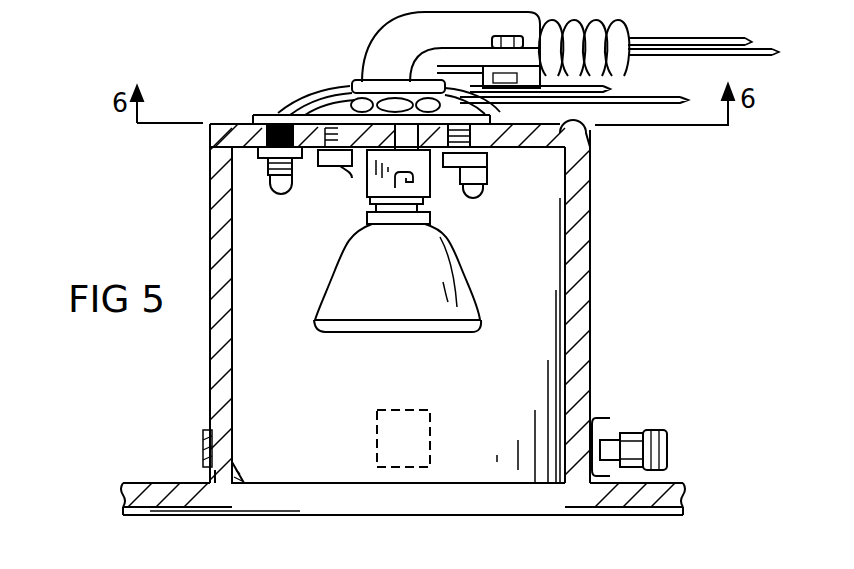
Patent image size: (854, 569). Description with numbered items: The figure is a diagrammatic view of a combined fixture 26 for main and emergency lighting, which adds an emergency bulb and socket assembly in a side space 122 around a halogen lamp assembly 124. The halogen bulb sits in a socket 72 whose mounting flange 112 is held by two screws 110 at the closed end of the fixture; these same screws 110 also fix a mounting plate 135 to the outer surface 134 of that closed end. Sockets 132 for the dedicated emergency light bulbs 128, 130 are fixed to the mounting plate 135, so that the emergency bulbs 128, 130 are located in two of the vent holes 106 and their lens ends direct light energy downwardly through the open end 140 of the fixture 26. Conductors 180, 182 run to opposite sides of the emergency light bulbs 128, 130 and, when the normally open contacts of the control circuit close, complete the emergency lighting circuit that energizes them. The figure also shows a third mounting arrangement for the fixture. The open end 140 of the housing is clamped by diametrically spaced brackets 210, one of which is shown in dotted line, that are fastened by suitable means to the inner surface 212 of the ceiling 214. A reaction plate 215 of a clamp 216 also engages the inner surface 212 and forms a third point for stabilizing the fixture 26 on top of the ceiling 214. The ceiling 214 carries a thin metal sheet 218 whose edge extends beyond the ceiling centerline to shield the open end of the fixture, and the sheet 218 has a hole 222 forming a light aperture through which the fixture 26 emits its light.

The combined fixture 26 is at (592, 304).
The socket 72 is at (372, 187).
The vent holes 106 is at (272, 117).
The screws 110 is at (440, 170).
The mounting flange 112 is at (354, 172).
The side space 122 is at (291, 309).
The halogen lamp assembly 124 is at (475, 278).
The emergency light bulb 128 is at (278, 194).
The emergency light bulb 130 is at (485, 180).
The sockets 132 is at (223, 138).
The outer surface 134 is at (590, 142).
The mounting plate 135 is at (345, 116).
The open end 140 is at (235, 476).
The conductor 180 is at (700, 98).
The conductor 182 is at (580, 82).
The brackets 210 is at (432, 434).
The inner surface 212 is at (160, 478).
The ceiling 214 is at (662, 494).
The reaction plate 215 is at (604, 418).
The clamp 216 is at (643, 428).
The thin metal sheet 218 is at (203, 513).
The hole 222 is at (565, 513).